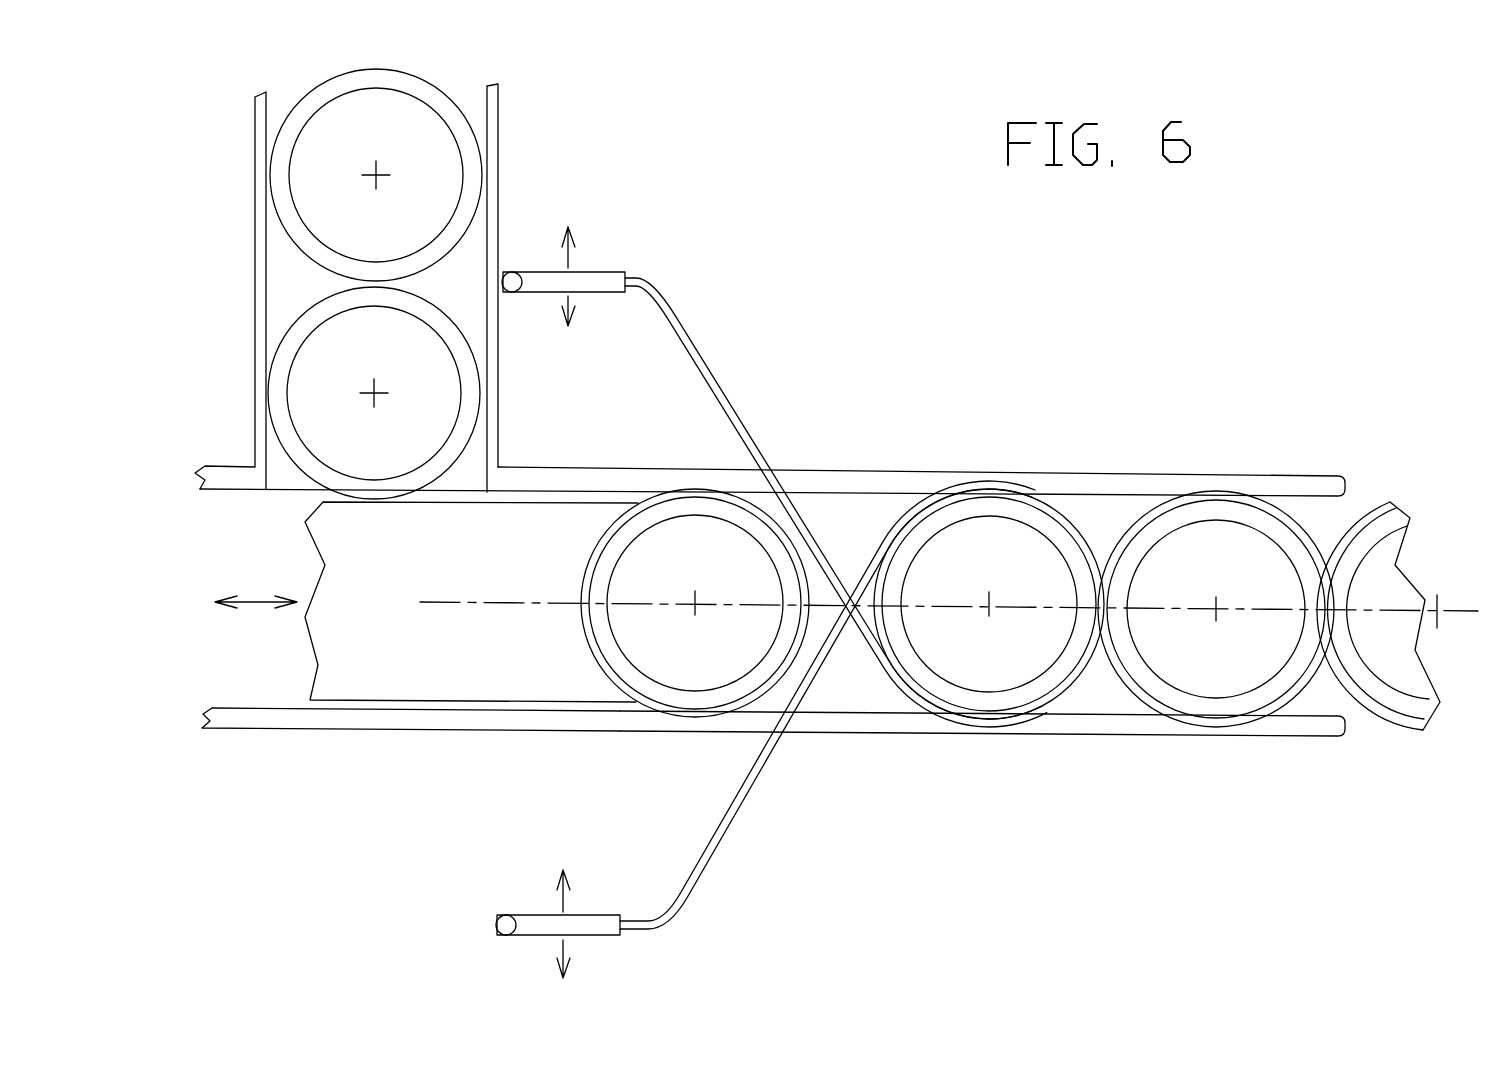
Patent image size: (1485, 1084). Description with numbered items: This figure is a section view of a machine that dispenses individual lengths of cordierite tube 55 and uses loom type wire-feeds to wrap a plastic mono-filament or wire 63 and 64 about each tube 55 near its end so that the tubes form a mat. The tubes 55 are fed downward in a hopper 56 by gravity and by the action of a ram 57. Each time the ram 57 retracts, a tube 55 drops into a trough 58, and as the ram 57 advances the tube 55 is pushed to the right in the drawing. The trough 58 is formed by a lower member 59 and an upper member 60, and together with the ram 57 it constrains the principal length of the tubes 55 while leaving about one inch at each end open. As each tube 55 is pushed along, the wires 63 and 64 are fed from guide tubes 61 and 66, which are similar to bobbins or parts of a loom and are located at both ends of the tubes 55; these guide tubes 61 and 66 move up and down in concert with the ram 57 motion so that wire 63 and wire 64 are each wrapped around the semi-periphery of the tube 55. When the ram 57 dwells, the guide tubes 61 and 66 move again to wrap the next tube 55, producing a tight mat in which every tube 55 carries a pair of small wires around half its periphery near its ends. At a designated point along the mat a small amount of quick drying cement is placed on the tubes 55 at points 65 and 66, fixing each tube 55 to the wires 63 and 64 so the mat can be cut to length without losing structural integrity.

The cordierite tube 55 is at (472, 130).
The hopper 56 is at (500, 188).
The ram 57 is at (483, 702).
The trough 58 is at (318, 730).
The lower member 59 is at (877, 735).
The upper member 60 is at (973, 470).
The guide tube 61 is at (600, 272).
The plastic mono-filament or wire 63 is at (706, 360).
The plastic mono-filament or wire 64 is at (748, 805).
The cement point 65 is at (1210, 497).
The guide tube 66 is at (587, 913).